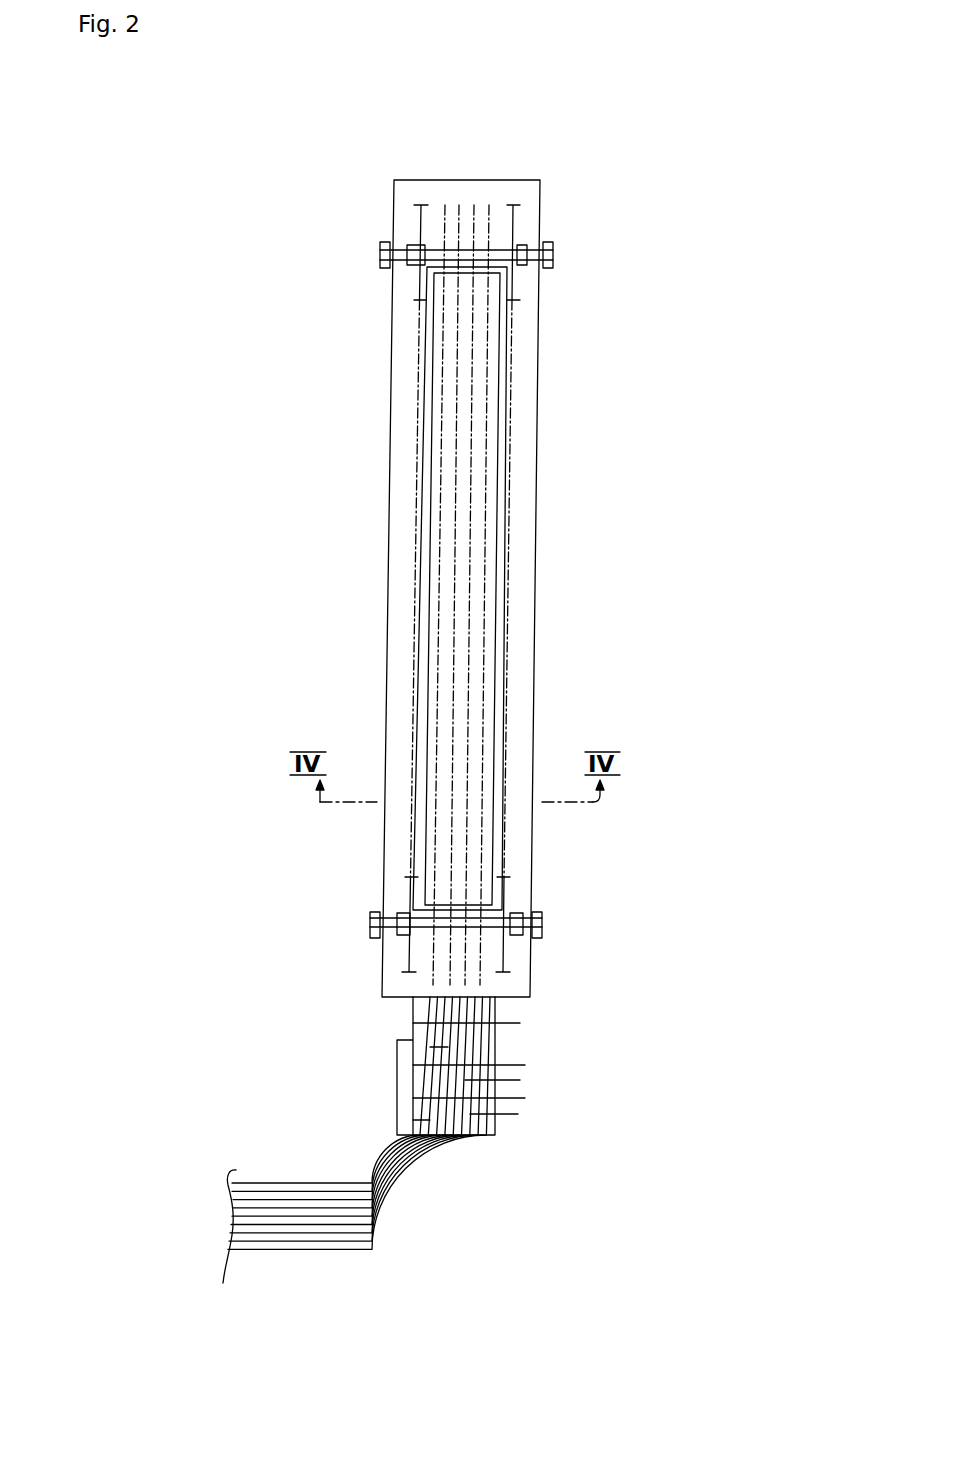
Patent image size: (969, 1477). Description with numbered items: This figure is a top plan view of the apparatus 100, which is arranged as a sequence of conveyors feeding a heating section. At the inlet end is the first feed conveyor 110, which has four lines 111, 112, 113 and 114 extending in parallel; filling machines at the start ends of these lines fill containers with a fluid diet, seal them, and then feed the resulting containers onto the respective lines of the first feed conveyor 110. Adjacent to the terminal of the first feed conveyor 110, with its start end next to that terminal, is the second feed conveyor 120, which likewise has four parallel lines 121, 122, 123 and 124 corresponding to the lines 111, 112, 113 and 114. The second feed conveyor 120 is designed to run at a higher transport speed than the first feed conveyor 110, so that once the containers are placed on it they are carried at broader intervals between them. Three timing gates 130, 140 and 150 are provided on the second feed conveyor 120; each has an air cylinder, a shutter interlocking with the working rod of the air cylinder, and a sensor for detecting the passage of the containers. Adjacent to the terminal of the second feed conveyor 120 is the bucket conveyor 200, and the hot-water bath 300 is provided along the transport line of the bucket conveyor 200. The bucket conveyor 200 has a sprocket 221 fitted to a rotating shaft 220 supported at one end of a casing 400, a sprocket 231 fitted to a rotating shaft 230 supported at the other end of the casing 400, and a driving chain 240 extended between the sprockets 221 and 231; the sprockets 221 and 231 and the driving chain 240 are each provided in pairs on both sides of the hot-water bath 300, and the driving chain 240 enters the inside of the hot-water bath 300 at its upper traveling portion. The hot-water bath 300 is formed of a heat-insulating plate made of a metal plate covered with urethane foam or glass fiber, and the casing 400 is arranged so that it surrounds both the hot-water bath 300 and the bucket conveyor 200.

The apparatus 100 is at (255, 337).
The first feed conveyor 110 is at (281, 1147).
The line 111 is at (227, 1192).
The line 112 is at (237, 1210).
The line 113 is at (227, 1233).
The line 114 is at (225, 1257).
The second feed conveyor 120 is at (385, 1071).
The line 121 is at (430, 1120).
The line 122 is at (448, 1047).
The line 123 is at (520, 1080).
The line 124 is at (500, 1114).
The timing gate 130 is at (417, 1098).
The timing gate 140 is at (510, 1065).
The timing gate 150 is at (520, 1023).
The bucket conveyor 200 is at (398, 947).
The rotating shaft 220 is at (385, 917).
The sprocket 221 is at (408, 900).
The rotating shaft 230 is at (403, 243).
The sprocket 231 is at (420, 281).
The driving chain 240 is at (417, 462).
The hot-water bath 300 is at (417, 682).
The casing 400 is at (388, 580).